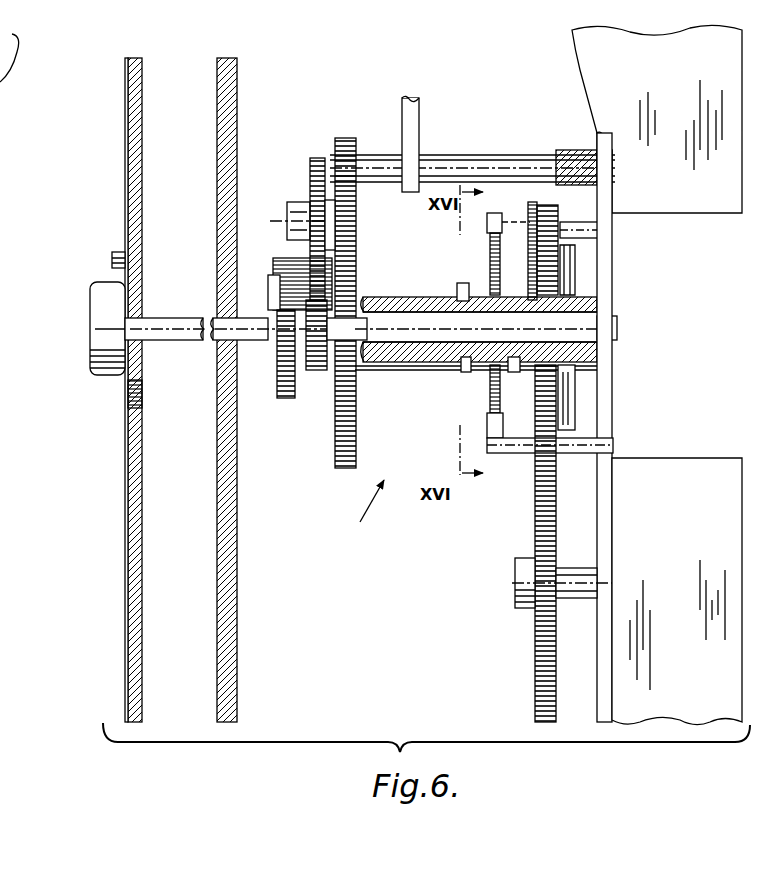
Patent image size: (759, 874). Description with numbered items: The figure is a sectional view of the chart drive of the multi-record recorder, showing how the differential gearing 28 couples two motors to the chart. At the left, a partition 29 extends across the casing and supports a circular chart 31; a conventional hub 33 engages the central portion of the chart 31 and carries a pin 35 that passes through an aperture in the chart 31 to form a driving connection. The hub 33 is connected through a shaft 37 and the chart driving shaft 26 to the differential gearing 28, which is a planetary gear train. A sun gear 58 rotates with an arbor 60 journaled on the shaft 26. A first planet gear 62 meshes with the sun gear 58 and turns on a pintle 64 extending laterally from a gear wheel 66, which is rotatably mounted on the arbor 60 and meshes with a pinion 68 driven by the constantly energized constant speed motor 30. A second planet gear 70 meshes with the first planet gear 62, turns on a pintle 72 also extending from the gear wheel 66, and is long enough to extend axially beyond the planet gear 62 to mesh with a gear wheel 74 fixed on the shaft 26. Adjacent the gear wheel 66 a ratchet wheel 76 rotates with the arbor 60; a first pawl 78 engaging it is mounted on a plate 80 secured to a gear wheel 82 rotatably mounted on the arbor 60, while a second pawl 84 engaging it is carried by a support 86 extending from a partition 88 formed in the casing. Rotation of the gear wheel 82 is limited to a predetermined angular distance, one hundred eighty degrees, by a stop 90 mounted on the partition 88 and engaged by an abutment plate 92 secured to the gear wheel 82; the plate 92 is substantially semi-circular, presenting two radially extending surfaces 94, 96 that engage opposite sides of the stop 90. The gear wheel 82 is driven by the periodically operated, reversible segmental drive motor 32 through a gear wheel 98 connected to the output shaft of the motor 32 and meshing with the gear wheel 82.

The shaft 26 is at (210, 340).
The differential gearing 28 is at (356, 518).
The partition 29 is at (138, 492).
The constant speed motor 30 is at (682, 75).
The circular chart 31 is at (125, 190).
The segmental drive motor 32 is at (656, 480).
The hub 33 is at (100, 298).
The pin 35 is at (118, 250).
The shaft 37 is at (156, 320).
The sun gear 58 is at (316, 370).
The arbor 60 is at (375, 298).
The first planet gear 62 is at (318, 158).
The pintle 64 is at (287, 225).
The gear wheel 66 is at (357, 230).
The pinion 68 is at (347, 138).
The second planet gear 70 is at (300, 262).
The pintle 72 is at (272, 292).
The gear wheel 74 is at (285, 382).
The ratchet wheel 76 is at (465, 298).
The first pawl 78 is at (488, 226).
The plate 80 is at (531, 272).
The gear wheel 82 is at (546, 215).
The second pawl 84 is at (488, 418).
The support 86 is at (518, 455).
The partition 88 is at (610, 382).
The stop 90 is at (588, 233).
The abutment plate 92 is at (570, 256).
The radially extending surface 94 is at (568, 270).
The radially extending surface 96 is at (575, 386).
The gear wheel 98 is at (538, 533).